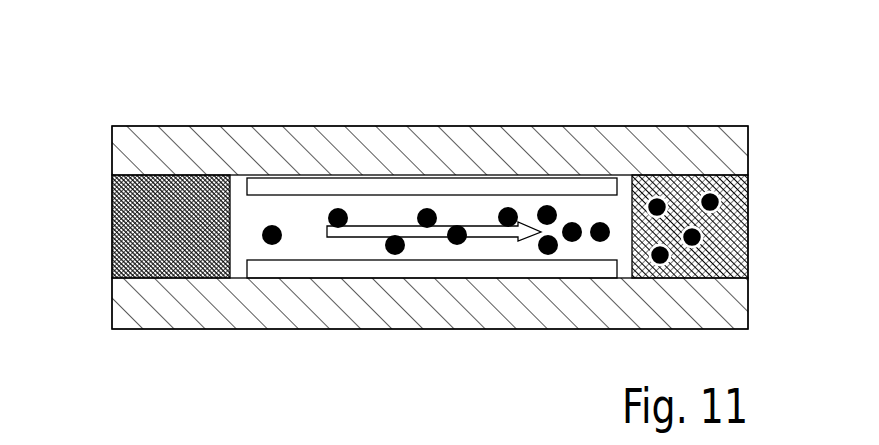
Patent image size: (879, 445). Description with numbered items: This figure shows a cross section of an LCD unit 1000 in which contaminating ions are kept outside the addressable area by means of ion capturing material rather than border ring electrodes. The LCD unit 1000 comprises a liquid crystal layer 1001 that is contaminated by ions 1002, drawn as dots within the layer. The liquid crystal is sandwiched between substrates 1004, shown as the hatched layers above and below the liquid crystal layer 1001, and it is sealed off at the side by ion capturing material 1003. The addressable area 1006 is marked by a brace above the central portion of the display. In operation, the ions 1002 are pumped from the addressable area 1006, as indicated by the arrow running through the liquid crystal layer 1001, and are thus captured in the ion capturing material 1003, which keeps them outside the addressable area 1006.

The LCD unit 1000 is at (153, 118).
The liquid crystal layer 1001 is at (253, 208).
The ions 1002 is at (344, 228).
The ion capturing material 1003 is at (740, 257).
The substrate 1004 is at (102, 125).
The addressable area 1006 is at (625, 118).